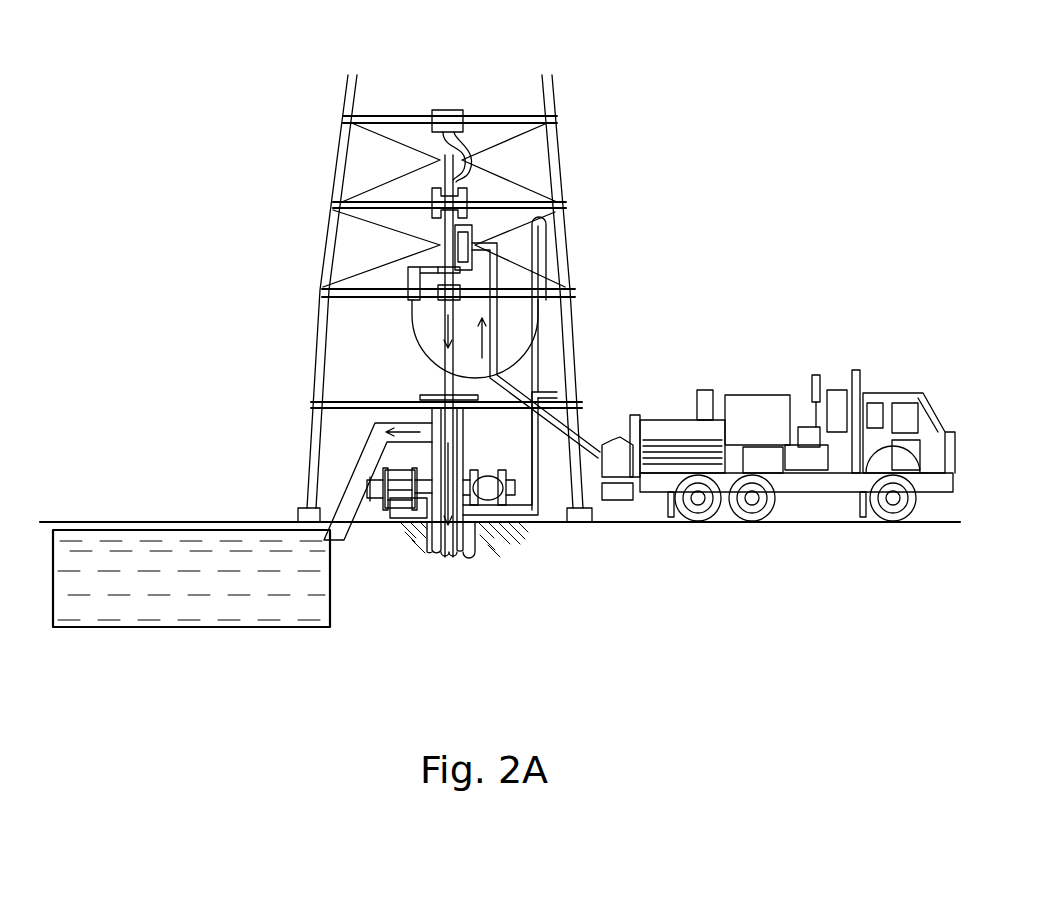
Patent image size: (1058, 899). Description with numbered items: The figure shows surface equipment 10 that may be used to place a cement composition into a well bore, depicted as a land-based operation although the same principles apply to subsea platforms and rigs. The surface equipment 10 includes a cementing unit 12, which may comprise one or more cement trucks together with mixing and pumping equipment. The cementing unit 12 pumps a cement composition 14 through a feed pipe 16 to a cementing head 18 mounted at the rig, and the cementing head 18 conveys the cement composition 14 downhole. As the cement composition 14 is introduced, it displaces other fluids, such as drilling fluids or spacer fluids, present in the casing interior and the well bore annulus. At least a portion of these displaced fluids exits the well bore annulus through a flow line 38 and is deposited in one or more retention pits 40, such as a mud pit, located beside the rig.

The surface equipment 10 is at (702, 137).
The cementing unit 12 is at (805, 497).
The cement composition 14 is at (443, 332).
The feed pipe 16 is at (546, 407).
The cementing head 18 is at (488, 192).
The flow line 38 is at (350, 470).
The retention pit 40 is at (197, 627).